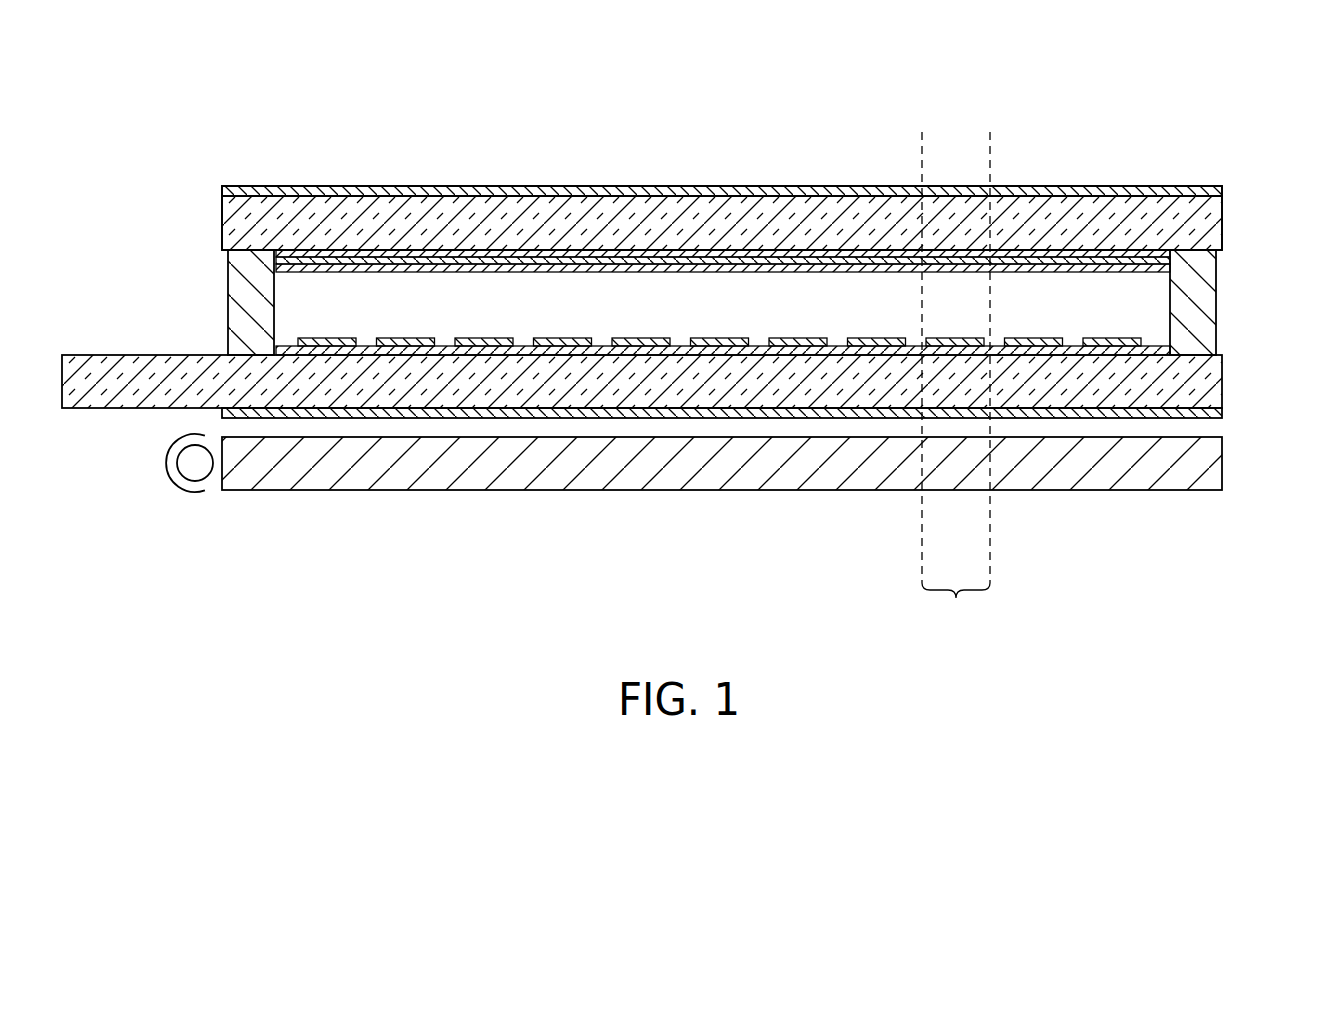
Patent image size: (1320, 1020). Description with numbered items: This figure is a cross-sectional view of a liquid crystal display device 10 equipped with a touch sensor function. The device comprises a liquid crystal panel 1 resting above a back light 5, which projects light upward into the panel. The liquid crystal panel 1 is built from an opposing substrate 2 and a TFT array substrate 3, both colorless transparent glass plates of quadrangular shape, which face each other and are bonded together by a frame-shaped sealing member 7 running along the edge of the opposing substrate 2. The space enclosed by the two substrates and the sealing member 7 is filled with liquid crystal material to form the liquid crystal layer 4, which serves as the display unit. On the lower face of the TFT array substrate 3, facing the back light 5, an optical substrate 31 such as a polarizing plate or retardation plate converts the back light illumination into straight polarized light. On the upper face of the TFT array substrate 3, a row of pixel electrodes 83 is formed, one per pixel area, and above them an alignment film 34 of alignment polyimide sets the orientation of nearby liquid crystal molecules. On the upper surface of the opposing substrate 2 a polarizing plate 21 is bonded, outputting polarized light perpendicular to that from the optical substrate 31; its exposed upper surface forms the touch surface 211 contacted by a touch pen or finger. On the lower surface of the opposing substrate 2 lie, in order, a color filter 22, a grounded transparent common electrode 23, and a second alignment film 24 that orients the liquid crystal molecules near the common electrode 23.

The liquid crystal display device 10 is at (1223, 143).
The liquid crystal panel 1 is at (1270, 187).
The opposing substrate 2 is at (1210, 216).
The polarizing plate 21 is at (831, 196).
The touch surface 211 is at (1073, 186).
The color filter 22 is at (437, 260).
The common electrode 23 is at (612, 268).
The alignment film 24 is at (334, 253).
The liquid crystal layer 4 is at (1146, 298).
The sealing member 7 is at (232, 293).
The TFT array substrate 3 is at (1213, 382).
The optical substrate 31 is at (720, 414).
The alignment film 34 is at (560, 354).
The pixel electrodes 83 is at (487, 353).
The back light 5 is at (1213, 460).